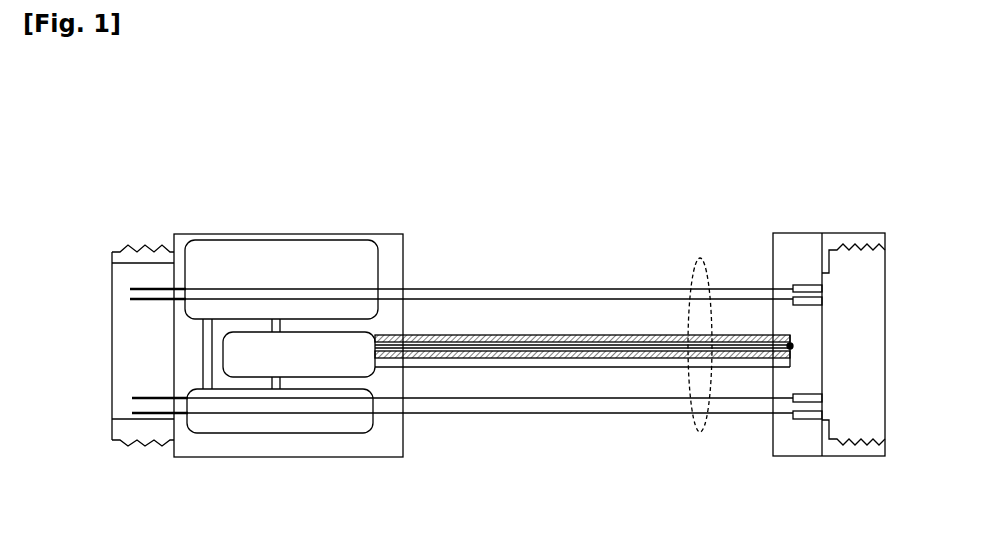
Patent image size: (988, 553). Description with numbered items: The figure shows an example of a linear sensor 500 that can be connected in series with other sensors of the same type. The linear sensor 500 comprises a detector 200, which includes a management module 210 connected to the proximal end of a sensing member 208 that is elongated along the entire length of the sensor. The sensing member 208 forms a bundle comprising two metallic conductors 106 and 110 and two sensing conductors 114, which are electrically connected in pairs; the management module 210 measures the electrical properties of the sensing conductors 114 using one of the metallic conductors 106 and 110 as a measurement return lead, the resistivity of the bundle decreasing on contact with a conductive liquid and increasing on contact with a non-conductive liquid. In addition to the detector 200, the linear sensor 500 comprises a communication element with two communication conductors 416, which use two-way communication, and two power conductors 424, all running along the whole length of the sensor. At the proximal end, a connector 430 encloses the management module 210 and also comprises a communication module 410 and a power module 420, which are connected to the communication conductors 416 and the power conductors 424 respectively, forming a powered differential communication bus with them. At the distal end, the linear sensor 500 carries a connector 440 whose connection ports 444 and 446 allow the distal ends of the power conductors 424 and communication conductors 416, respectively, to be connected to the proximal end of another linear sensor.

The linear sensor 500 is at (270, 95).
The connector 430 is at (178, 233).
The power module 420 is at (220, 252).
The communication module 410 is at (245, 423).
The management module 210 is at (360, 345).
The detector 200 is at (570, 225).
The sensing conductors 114 is at (430, 336).
The metallic conductor 110 is at (477, 347).
The metallic conductor 106 is at (533, 367).
The power conductors 424 is at (653, 286).
The communication conductors 416 is at (552, 402).
The sensing member 208 is at (700, 432).
The connector 440 is at (793, 260).
The connection port 444 is at (825, 293).
The connection port 446 is at (837, 399).